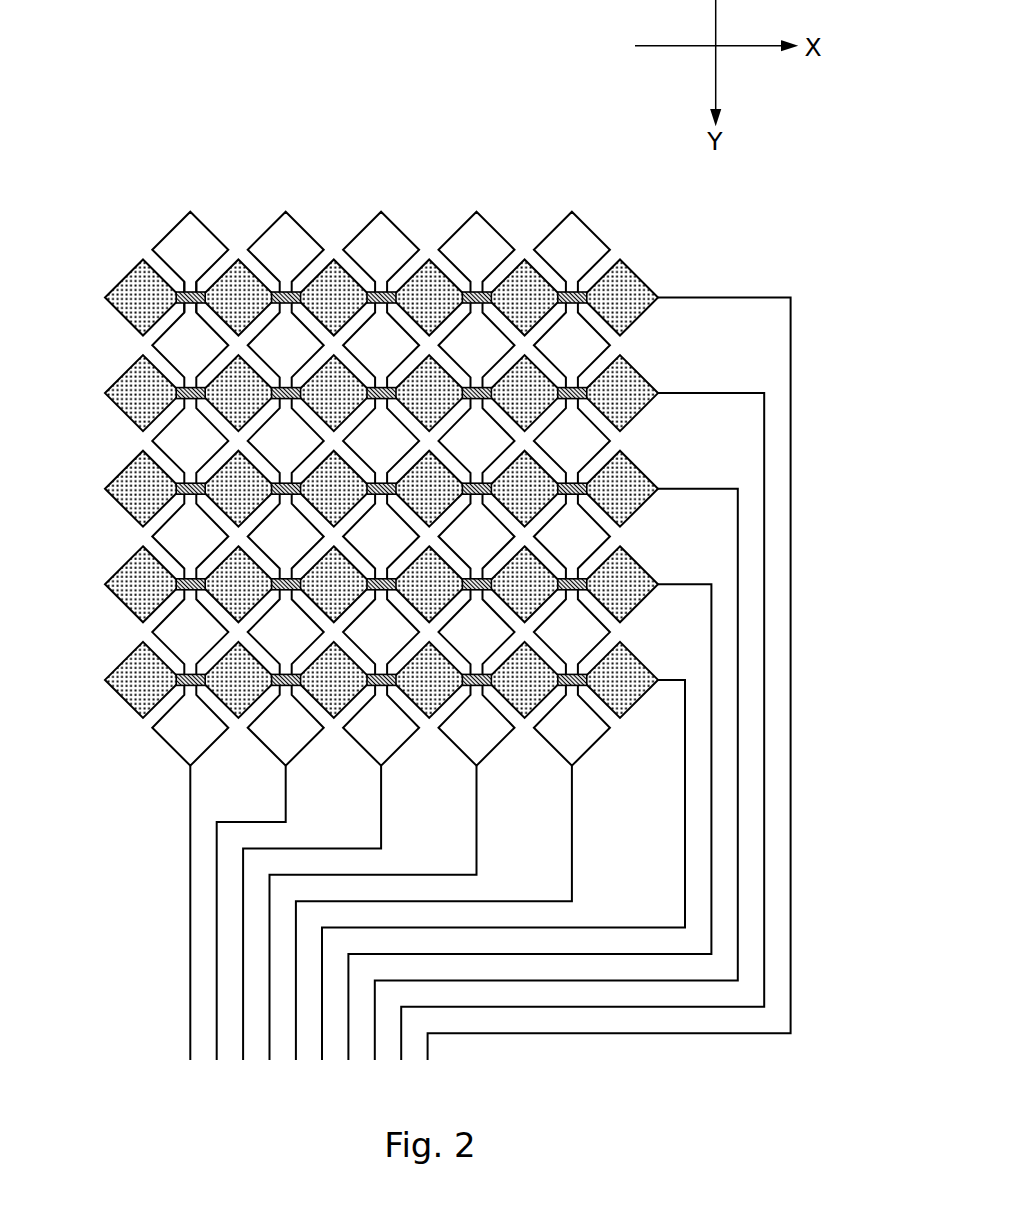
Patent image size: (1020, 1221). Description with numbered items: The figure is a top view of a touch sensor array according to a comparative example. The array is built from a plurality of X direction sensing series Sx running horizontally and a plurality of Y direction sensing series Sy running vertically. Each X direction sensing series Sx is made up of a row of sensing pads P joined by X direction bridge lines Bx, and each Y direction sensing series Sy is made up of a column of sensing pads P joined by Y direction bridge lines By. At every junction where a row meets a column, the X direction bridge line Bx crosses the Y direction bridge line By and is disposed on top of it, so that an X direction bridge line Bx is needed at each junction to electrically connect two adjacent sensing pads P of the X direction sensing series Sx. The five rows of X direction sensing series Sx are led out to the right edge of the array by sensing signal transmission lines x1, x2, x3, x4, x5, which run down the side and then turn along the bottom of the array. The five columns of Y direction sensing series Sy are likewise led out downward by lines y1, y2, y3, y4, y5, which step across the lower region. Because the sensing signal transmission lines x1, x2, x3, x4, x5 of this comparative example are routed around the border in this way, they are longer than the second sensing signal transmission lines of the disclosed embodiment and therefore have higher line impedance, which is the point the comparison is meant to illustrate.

The X direction sensing series Sx is at (103, 298).
The Y direction sensing series Sy is at (189, 211).
The X direction bridge line Bx is at (178, 289).
The Y direction bridge line By is at (197, 285).
The sensing pad P is at (177, 235).
The sensing signal transmission line x1 is at (685, 726).
The sensing signal transmission line x2 is at (711, 630).
The sensing signal transmission line x3 is at (738, 534).
The sensing signal transmission line x4 is at (764, 439).
The sensing signal transmission line x5 is at (791, 341).
The first Y trace line y1 is at (190, 798).
The second Y trace line y2 is at (286, 798).
The third Y trace line y3 is at (381, 798).
The fourth Y trace line y4 is at (476, 798).
The fifth Y trace line y5 is at (572, 798).